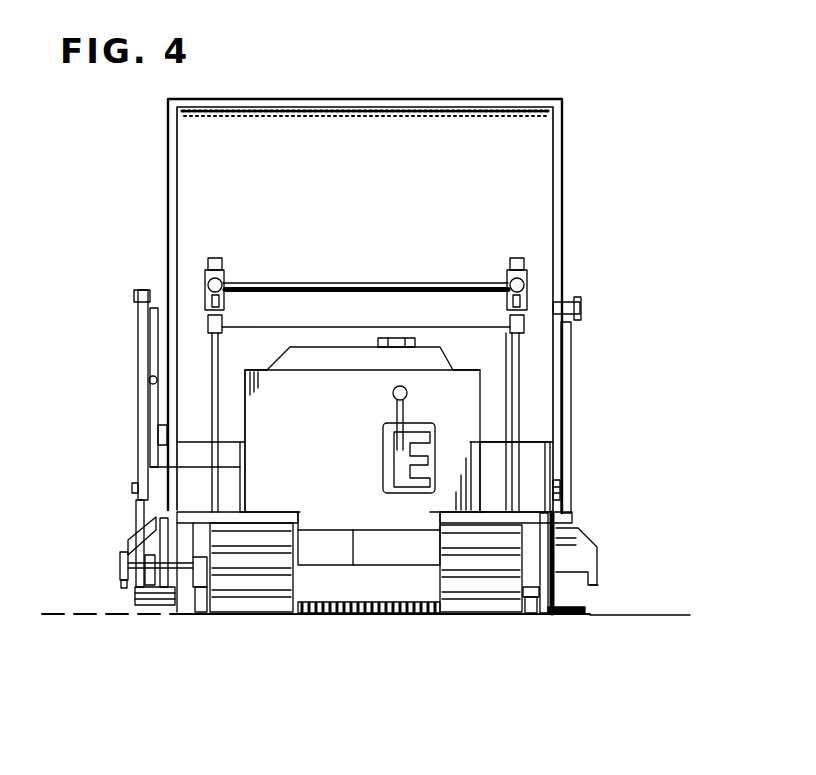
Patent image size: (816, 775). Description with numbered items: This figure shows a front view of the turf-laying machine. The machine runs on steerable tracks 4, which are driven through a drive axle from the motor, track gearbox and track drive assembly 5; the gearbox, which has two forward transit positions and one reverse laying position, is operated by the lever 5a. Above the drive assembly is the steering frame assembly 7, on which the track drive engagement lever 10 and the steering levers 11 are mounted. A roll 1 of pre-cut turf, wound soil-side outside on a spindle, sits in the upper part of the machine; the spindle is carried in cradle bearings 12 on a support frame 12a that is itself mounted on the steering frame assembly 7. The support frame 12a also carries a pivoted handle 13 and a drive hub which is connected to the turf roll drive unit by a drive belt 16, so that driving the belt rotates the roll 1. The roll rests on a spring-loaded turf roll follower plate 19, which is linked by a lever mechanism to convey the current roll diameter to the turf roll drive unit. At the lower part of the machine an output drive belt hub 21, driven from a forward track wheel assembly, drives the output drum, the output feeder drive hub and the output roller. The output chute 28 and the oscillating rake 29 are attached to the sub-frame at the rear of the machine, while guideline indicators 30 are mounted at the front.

The roll 1 is at (322, 128).
The steerable tracks 4 is at (403, 587).
The motor, track gearbox and track drive assembly 5 is at (283, 425).
The lever 5a is at (428, 444).
The steering frame assembly 7 is at (367, 283).
The track drive engagement lever 10 is at (521, 260).
The steering levers 11 is at (527, 293).
The cradle bearings 12 is at (579, 308).
The support frame 12a is at (571, 431).
The pivoted handle 13 is at (541, 101).
The drive belt 16 is at (142, 437).
The spring-loaded turf roll follower plate 19 is at (540, 481).
The output drive belt hub 21 is at (121, 565).
The output chute 28 is at (537, 570).
The oscillating rake 29 is at (337, 616).
The guideline indicators 30 is at (557, 548).